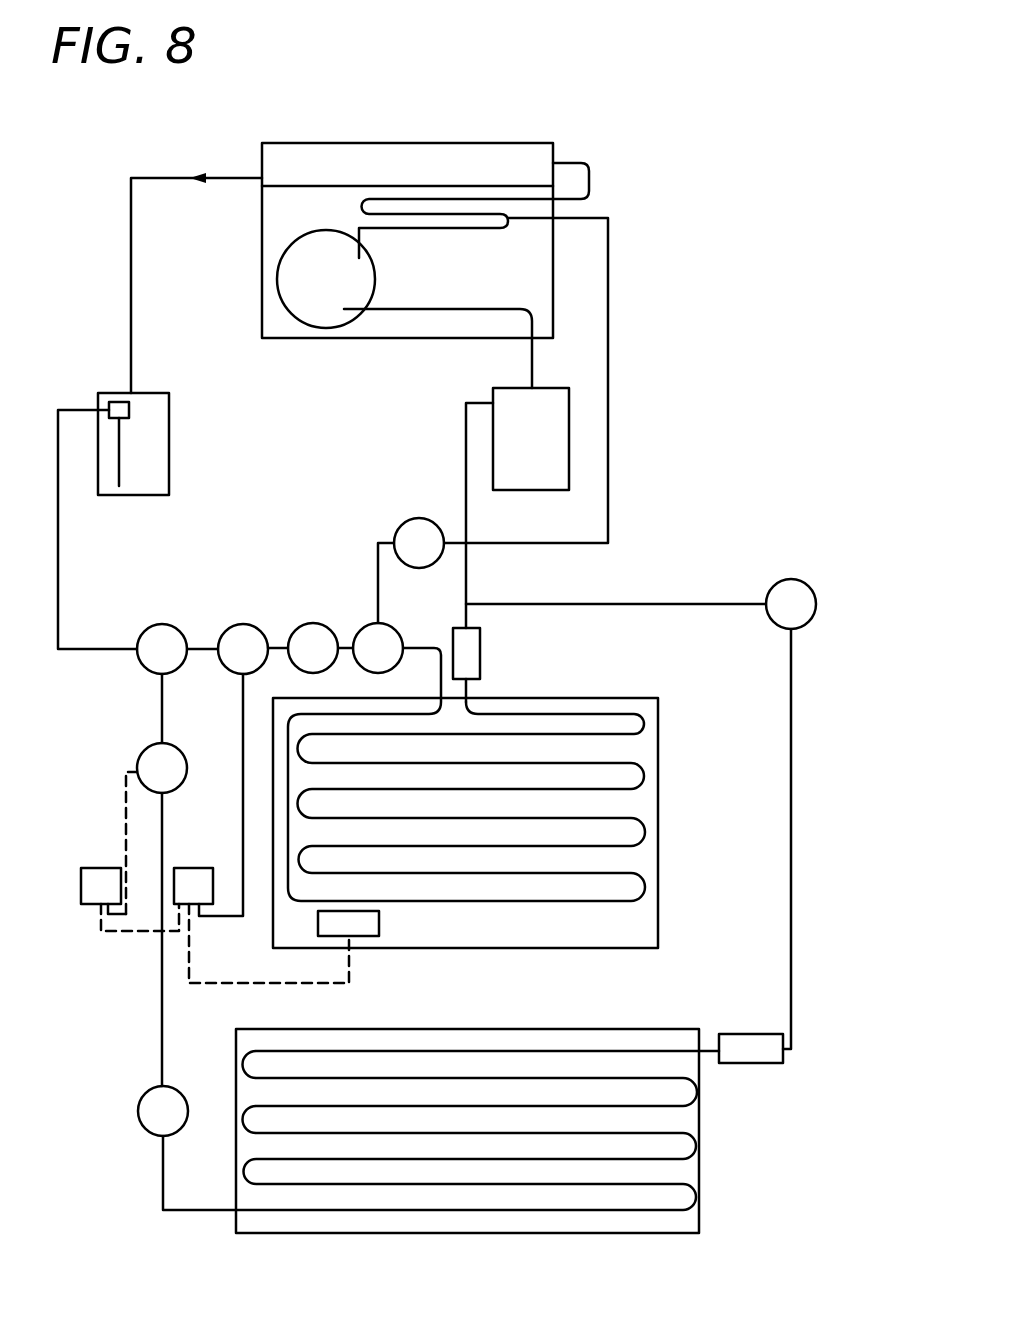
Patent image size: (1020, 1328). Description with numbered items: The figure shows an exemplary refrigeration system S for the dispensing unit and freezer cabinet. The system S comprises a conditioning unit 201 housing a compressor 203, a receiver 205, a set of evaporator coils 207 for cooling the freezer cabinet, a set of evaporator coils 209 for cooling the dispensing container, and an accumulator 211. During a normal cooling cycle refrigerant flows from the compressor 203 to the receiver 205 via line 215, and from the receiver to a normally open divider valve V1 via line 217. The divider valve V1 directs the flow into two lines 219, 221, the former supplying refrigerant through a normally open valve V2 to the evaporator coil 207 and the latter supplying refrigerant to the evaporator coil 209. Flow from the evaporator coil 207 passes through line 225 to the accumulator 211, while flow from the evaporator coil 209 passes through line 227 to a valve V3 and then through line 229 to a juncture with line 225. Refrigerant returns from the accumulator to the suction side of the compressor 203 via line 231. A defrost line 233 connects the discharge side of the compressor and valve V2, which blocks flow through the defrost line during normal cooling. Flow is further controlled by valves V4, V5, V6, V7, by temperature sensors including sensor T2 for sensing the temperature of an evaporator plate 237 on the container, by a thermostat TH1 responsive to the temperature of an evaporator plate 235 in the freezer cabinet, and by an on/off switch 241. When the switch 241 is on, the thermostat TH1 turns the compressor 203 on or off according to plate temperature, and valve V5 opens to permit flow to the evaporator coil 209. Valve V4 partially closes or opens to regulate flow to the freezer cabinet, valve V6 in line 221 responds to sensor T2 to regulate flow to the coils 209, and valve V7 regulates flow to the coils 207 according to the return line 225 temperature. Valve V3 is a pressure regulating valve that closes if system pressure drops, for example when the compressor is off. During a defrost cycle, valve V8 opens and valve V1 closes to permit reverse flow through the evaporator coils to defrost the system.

The refrigeration system S is at (606, 131).
The conditioning unit 201 is at (372, 142).
The compressor 203 is at (377, 281).
The receiver 205 is at (168, 462).
The evaporator coils 207 is at (643, 721).
The evaporator coils 209 is at (682, 1193).
The accumulator 211 is at (568, 463).
The line 215 is at (130, 268).
The line 217 is at (57, 579).
The line 219 is at (197, 623).
The line 221 is at (162, 1037).
The line 225 is at (465, 450).
The line 227 is at (792, 803).
The line 229 is at (686, 603).
The line 231 is at (531, 357).
The defrost line 233 is at (610, 376).
The evaporator plate 235 is at (620, 930).
The evaporator plate 237 is at (473, 1036).
The on/off switch 241 is at (100, 831).
The thermostat TH1 is at (232, 831).
The temperature sensor T2 is at (751, 1048).
The divider valve V1 is at (162, 649).
The valve V2 is at (378, 648).
The pressure regulating valve V3 is at (791, 604).
The valve V4 is at (243, 649).
The valve V5 is at (162, 768).
The valve V6 is at (163, 1111).
The valve V7 is at (313, 648).
The valve V8 is at (419, 543).